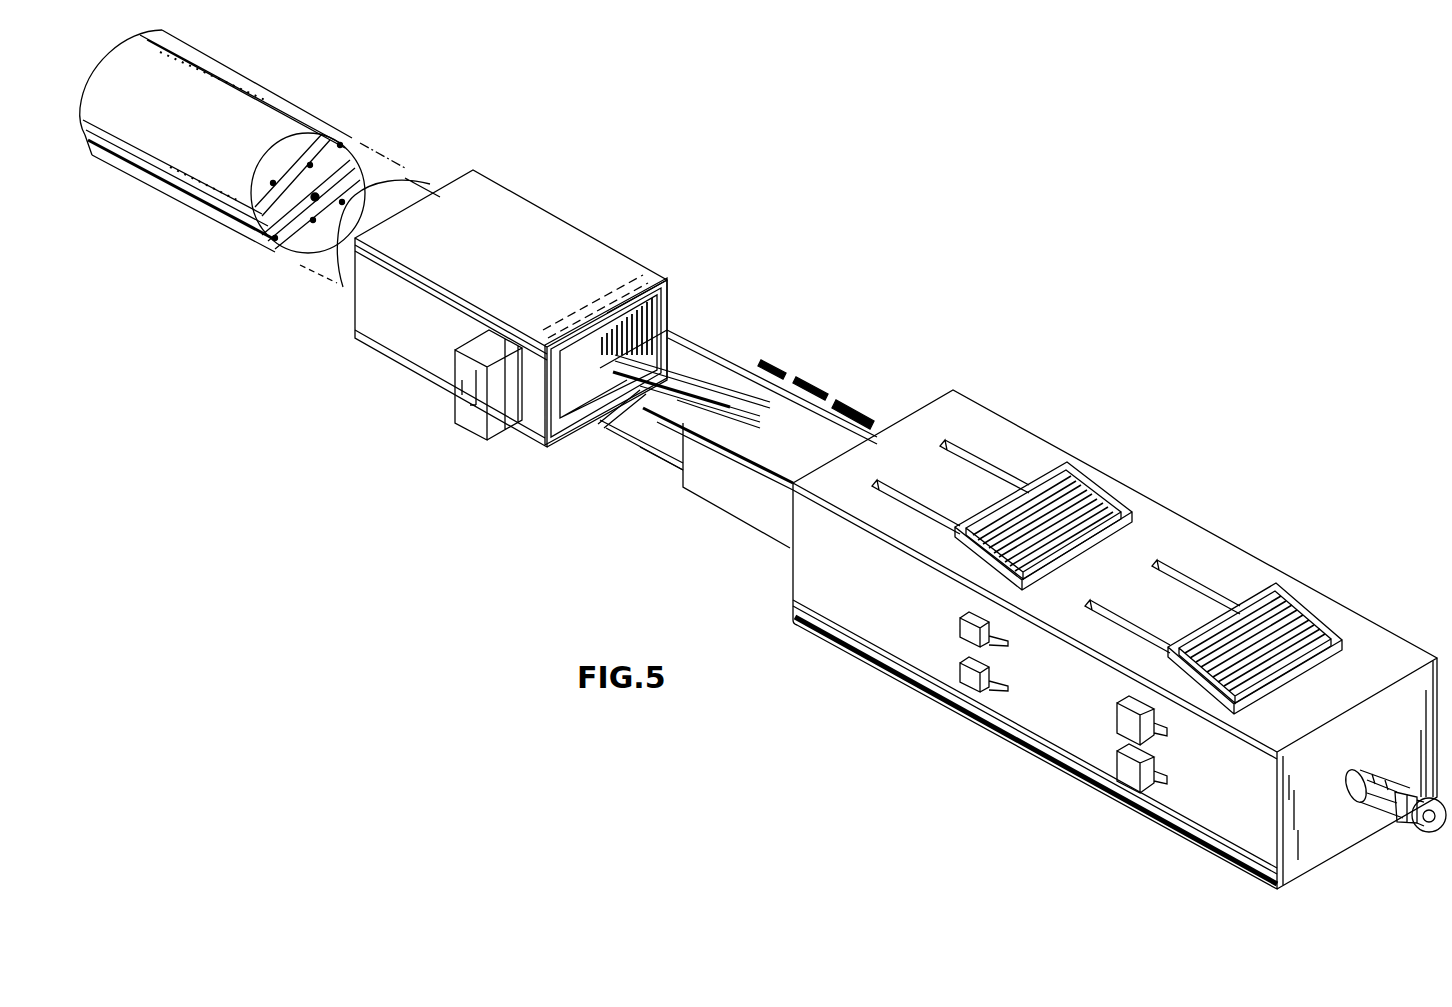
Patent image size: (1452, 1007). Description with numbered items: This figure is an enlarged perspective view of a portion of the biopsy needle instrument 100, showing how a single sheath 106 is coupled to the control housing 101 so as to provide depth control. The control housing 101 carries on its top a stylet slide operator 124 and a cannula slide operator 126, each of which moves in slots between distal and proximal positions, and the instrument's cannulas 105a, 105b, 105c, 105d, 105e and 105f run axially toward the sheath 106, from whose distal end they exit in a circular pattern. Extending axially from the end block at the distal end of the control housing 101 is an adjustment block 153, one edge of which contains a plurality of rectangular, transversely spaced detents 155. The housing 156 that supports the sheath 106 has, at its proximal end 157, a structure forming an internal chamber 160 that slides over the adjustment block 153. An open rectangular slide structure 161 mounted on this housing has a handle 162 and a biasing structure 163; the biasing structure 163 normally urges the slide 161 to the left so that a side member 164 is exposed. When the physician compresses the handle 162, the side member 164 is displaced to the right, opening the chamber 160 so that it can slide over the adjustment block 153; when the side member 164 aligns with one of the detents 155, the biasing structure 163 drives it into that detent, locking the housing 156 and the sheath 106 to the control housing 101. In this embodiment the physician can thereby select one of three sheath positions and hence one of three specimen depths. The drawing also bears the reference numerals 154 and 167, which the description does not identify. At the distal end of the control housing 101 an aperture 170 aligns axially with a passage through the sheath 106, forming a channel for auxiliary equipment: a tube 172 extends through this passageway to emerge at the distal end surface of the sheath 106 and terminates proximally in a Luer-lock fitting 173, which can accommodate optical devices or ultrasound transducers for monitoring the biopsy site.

The biopsy needle instrument 100 is at (1115, 639).
The control housing 101 is at (1047, 448).
The sheath 106 is at (297, 103).
The stylet slide operator 124 is at (1327, 620).
The cannula slide operator 126 is at (1107, 497).
The adjustment block 153 is at (758, 383).
The connector 154 is at (783, 372).
The detents 155 is at (835, 403).
The housing 156 is at (537, 308).
The proximal end 157 is at (663, 303).
The internal chamber 160 is at (612, 303).
The open rectangular slide structure 161 is at (640, 275).
The handle 162 is at (458, 392).
The biasing structure 163 is at (468, 390).
The side member 164 is at (605, 340).
The support plate 167 is at (735, 495).
The cannula 105a is at (653, 410).
The cannula 105b is at (658, 425).
The cannula 105c is at (705, 397).
The cannula 105d is at (600, 425).
The cannula 105e is at (665, 368).
The cannula 105f is at (743, 367).
The aperture 170 is at (702, 414).
The tube 172 is at (1357, 781).
The Luer-lock fitting 173 is at (1403, 827).